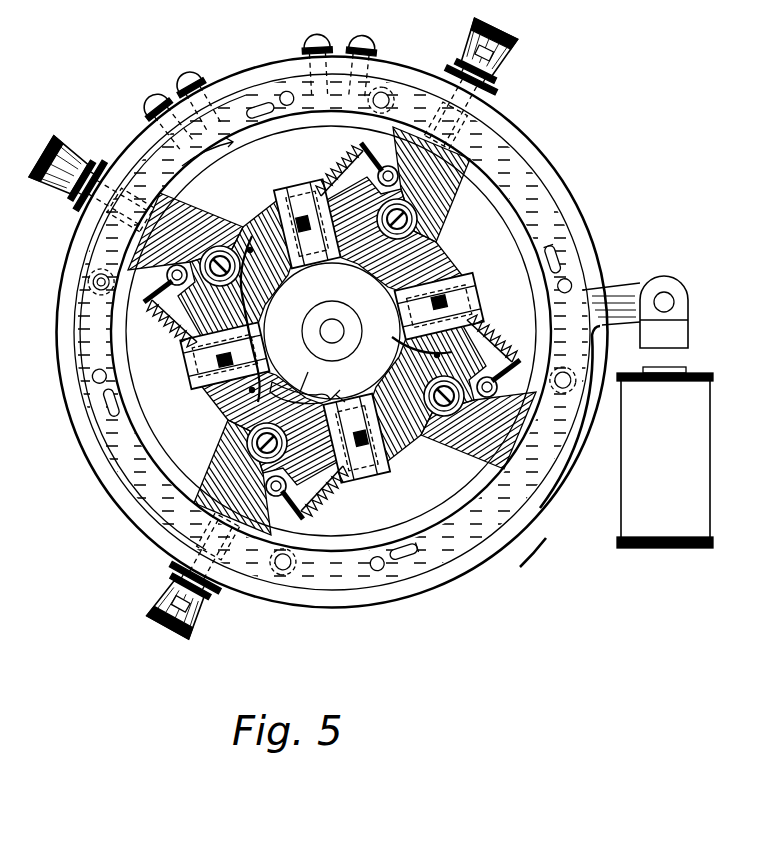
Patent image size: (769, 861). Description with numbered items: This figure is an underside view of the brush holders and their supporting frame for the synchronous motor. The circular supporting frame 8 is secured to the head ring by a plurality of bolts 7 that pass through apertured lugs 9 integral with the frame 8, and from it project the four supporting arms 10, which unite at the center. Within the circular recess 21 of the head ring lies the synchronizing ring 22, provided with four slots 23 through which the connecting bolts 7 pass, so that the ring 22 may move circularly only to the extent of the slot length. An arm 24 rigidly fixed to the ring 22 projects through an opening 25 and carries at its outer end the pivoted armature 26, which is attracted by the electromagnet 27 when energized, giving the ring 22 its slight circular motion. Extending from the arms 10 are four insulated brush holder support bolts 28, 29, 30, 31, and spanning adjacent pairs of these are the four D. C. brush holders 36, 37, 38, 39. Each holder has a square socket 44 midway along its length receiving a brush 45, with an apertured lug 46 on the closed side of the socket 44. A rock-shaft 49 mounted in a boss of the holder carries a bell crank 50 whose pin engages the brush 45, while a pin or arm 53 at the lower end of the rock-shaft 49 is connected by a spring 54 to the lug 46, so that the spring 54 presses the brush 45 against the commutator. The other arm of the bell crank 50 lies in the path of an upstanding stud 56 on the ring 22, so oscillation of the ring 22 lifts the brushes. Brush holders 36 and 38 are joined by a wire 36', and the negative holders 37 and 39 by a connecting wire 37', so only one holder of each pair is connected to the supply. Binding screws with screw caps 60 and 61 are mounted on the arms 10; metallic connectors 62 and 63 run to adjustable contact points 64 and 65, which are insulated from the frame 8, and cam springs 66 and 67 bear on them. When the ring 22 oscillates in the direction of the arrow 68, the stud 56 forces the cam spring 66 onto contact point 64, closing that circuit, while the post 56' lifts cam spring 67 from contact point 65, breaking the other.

The bolts 7 is at (270, 95).
The circular supporting frame 8 is at (95, 468).
The apertured lugs 9 is at (555, 253).
The supporting arms 10 is at (200, 212).
The circular recess 21 is at (540, 545).
The ring 22 is at (470, 490).
The slots 23 is at (118, 408).
The arm 24 is at (610, 293).
The opening 25 is at (598, 352).
The armature 26 is at (688, 330).
The electromagnet 27 is at (710, 413).
The bolt 28 is at (418, 220).
The bolt 29 is at (222, 248).
The bolt 30 is at (250, 446).
The bolt 31 is at (440, 412).
The D. C. brush holder 36 is at (332, 331).
The wire 36' is at (267, 319).
The D. C. brush holder 37 is at (300, 384).
The connecting wire 37' is at (317, 379).
The D. C. brush holder 38 is at (344, 387).
The D. C. brush holder 39 is at (410, 350).
The square socket 44 is at (305, 248).
The brush 45 is at (295, 298).
The apertured lug 46 is at (290, 188).
The rock-shaft 49 is at (400, 180).
The bell crank 50 is at (168, 280).
The pin or arm 53 is at (528, 345).
The spring 54 is at (330, 168).
The upstanding stud 56 is at (351, 361).
The post 56' is at (69, 274).
The screw cap 60 is at (510, 66).
The screw cap 61 is at (92, 134).
The metallic connector 62 is at (490, 112).
The metallic connector 63 is at (110, 222).
The adjustable contact point 64 is at (500, 125).
The adjustable contact point 65 is at (480, 45).
The cam spring 66 is at (400, 75).
The cam spring 67 is at (145, 150).
The arrow 68 is at (207, 153).